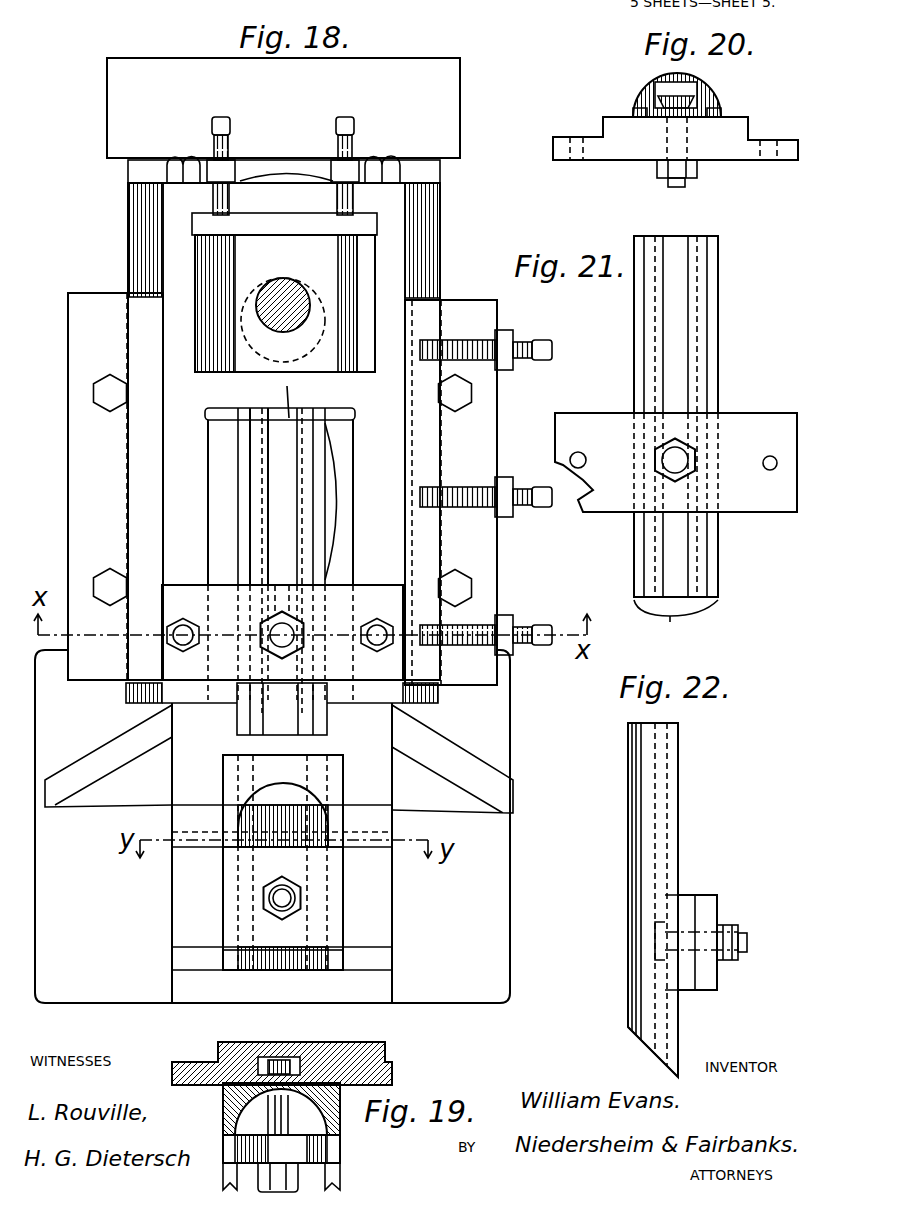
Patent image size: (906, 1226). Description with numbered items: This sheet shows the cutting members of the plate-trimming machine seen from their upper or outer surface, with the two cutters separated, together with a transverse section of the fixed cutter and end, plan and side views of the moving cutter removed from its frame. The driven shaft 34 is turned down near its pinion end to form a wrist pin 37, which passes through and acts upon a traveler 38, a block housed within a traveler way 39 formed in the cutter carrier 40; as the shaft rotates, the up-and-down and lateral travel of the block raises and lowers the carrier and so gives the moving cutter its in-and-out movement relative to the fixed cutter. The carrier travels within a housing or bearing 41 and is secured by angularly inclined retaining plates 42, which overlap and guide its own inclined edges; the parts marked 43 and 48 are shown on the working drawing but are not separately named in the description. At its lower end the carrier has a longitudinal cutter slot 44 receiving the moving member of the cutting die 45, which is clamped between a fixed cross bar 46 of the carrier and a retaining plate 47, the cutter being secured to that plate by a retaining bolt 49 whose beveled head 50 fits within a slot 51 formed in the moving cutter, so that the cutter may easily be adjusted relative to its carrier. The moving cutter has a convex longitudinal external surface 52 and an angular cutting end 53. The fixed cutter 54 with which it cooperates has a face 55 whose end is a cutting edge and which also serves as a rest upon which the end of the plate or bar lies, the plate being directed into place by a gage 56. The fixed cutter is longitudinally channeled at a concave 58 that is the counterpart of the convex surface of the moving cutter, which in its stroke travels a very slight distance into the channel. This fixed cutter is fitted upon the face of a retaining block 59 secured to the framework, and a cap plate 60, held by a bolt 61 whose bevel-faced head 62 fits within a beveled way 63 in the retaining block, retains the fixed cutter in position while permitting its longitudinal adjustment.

In FIG. 18, the driven shaft 34 is at (306, 346).
In FIG. 18, the wrist pin 37 is at (285, 290).
In FIG. 18, the traveler 38 is at (227, 303).
In FIG. 18, the traveler way 39 is at (362, 283).
In FIG. 18, the cutter carrier 40 is at (283, 443).
In FIG. 18, the housing or bearing 41 is at (274, 826).
In FIG. 18, the retaining plates 42 is at (68, 335).
In FIG. 18, the column 43 is at (137, 255).
In FIG. 18, the cutter slot 44 is at (222, 505).
In FIG. 18, the moving member of the cutting die 45 is at (340, 497).
In FIG. 20, the moving member of the cutting die 45 is at (700, 90).
In FIG. 21, the moving member of the cutting die 45 is at (698, 441).
In FIG. 22, the moving member of the cutting die 45 is at (674, 900).
In FIG. 18, the fixed cross bar 46 is at (282, 415).
In FIG. 18, the retaining plate 47 is at (172, 592).
In FIG. 20, the retaining plate 47 is at (725, 137).
In FIG. 21, the retaining plate 47 is at (676, 462).
In FIG. 22, the retaining plate 47 is at (707, 915).
In FIG. 18, the nut 48 is at (183, 647).
In FIG. 18, the retaining bolt 49 is at (285, 635).
In FIG. 20, the retaining bolt 49 is at (672, 185).
In FIG. 21, the retaining bolt 49 is at (677, 460).
In FIG. 22, the retaining bolt 49 is at (749, 944).
In FIG. 18, the head 50 is at (278, 605).
In FIG. 20, the head 50 is at (660, 101).
In FIG. 22, the head 50 is at (658, 935).
In FIG. 18, the slot 51 is at (283, 540).
In FIG. 20, the slot 51 is at (667, 88).
In FIG. 21, the slot 51 is at (676, 246).
In FIG. 22, the slot 51 is at (660, 742).
In FIG. 20, the convex longitudinal external surface 52 is at (650, 75).
In FIG. 22, the convex longitudinal external surface 52 is at (632, 1012).
In FIG. 22, the angular cutting end 53 is at (655, 1050).
In FIG. 18, the fixed cutter 54 is at (332, 823).
In FIG. 19, the fixed cutter 54 is at (235, 1108).
In FIG. 18, the face 55 is at (235, 773).
In FIG. 19, the gage 56 is at (223, 1173).
In FIG. 19, the concave 58 is at (305, 1115).
In FIG. 18, the retaining block 59 is at (177, 930).
In FIG. 19, the retaining block 59 is at (222, 1065).
In FIG. 18, the cap plate 60 is at (275, 865).
In FIG. 19, the cap plate 60 is at (300, 1148).
In FIG. 18, the bolt 61 is at (287, 900).
In FIG. 19, the bolt 61 is at (295, 1188).
In FIG. 19, the head 62 is at (290, 1045).
In FIG. 19, the beveled way 63 is at (270, 1060).